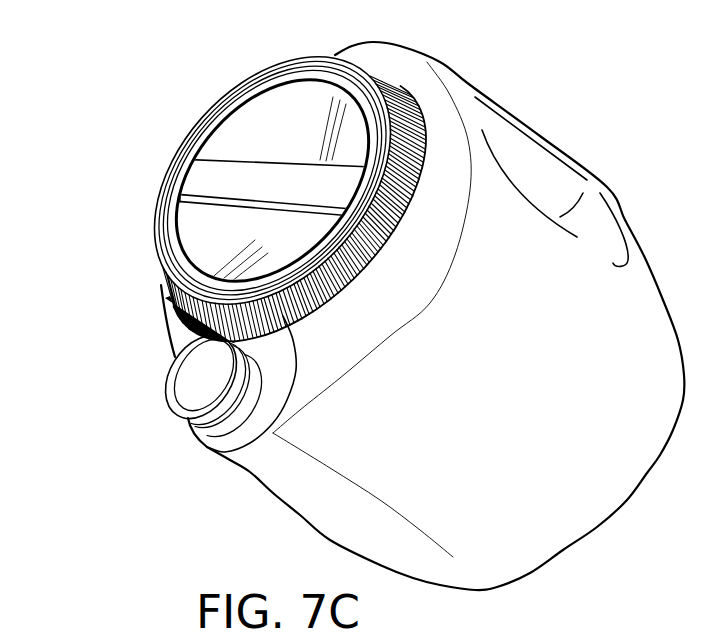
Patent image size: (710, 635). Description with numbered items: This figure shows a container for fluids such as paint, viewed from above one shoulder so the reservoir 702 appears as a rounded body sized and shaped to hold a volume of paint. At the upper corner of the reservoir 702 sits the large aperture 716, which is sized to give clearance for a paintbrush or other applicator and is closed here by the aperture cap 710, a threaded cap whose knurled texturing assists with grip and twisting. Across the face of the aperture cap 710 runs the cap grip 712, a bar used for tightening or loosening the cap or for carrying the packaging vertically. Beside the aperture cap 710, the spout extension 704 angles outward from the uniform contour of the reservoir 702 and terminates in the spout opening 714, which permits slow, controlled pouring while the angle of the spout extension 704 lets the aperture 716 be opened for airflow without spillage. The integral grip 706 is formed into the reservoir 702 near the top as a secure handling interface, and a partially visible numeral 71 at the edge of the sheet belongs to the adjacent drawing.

The reservoir 702 is at (578, 371).
The spout extension 704 is at (296, 470).
The integral grip 706 is at (528, 145).
The aperture cap 710 is at (228, 456).
The cap grip 712 is at (273, 173).
The spout opening 714 is at (175, 384).
The aperture 716 is at (423, 110).
The partial numeral 71 is at (648, 634).